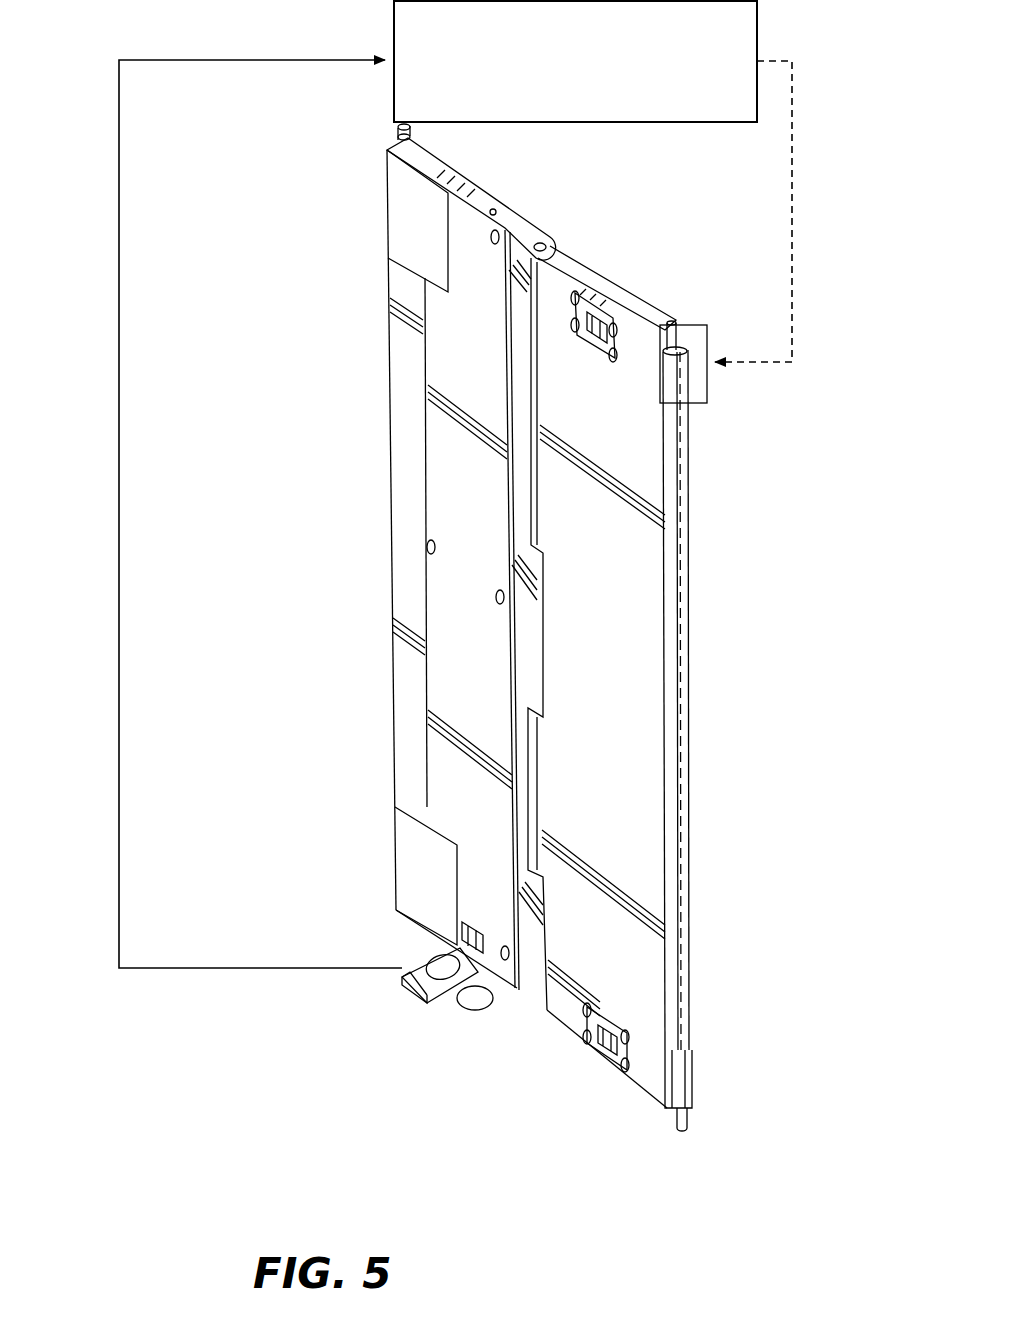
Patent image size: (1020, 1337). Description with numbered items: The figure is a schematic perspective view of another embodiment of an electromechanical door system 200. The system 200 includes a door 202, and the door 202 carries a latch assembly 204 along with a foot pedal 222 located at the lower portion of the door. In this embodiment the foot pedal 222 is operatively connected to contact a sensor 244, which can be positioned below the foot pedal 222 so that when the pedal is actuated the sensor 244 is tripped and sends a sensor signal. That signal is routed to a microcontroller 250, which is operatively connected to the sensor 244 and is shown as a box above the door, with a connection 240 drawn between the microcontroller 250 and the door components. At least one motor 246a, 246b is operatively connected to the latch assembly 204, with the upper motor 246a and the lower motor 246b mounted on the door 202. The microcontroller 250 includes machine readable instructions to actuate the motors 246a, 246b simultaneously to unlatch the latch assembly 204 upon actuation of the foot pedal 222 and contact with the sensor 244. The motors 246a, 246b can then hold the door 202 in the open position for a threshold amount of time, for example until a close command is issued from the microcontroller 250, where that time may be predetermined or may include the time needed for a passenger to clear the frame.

The electromechanical door system 200 is at (884, 180).
The door 202 is at (615, 630).
The latch assembly 204 is at (382, 484).
The foot pedal 222 is at (418, 1003).
The wiring 240 is at (119, 528).
The sensor 244 is at (477, 1012).
The motor 246a is at (380, 218).
The motor 246b is at (380, 872).
The microcontroller 250 is at (594, 72).